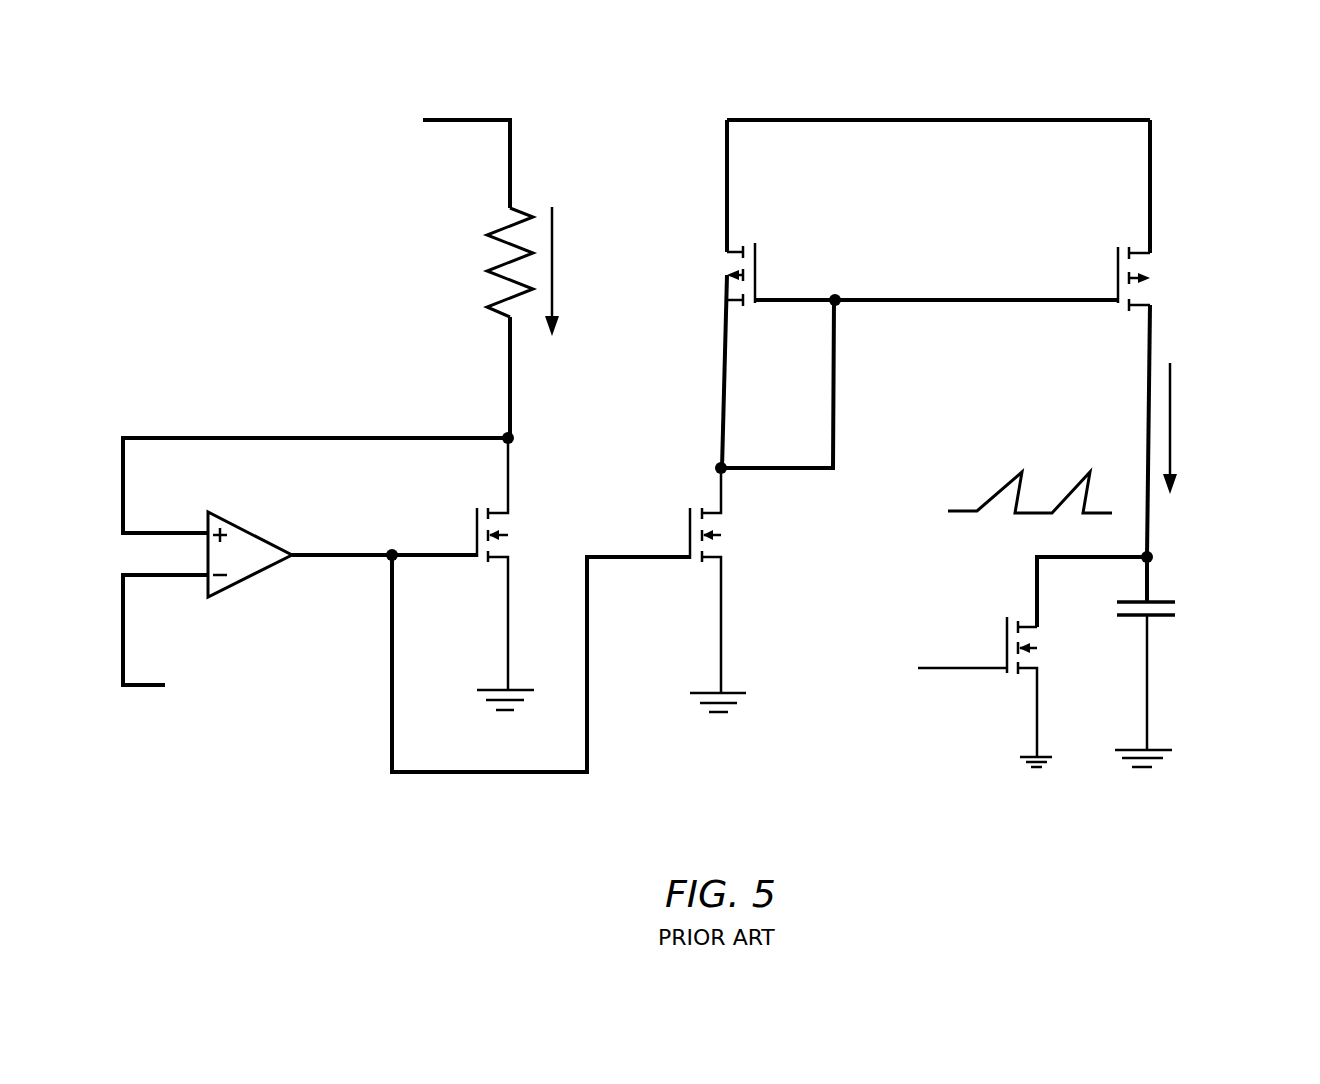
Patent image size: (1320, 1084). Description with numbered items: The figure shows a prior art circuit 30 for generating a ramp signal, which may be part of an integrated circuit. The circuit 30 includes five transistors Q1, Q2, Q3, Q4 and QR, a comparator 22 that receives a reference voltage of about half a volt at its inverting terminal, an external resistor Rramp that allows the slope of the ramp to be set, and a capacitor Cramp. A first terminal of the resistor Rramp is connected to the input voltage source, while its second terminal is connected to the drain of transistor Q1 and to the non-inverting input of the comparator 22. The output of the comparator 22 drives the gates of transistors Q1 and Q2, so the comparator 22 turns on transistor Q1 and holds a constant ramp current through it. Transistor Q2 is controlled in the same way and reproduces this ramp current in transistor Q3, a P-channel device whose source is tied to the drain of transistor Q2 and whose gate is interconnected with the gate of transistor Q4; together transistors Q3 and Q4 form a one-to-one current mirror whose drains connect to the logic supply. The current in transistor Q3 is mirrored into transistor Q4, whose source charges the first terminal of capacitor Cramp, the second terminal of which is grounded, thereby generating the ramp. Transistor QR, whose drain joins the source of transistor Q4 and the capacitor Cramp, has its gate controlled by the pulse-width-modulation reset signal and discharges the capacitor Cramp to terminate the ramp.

The comparator 22 is at (257, 534).
The prior art circuit 30 is at (646, 131).
The transistor Q1 is at (521, 574).
The transistor Q2 is at (736, 590).
The transistor Q3 is at (765, 294).
The transistor Q4 is at (1106, 338).
The transistor QR is at (1032, 662).
The resistor Rramp is at (452, 262).
The capacitor Cramp is at (1201, 662).